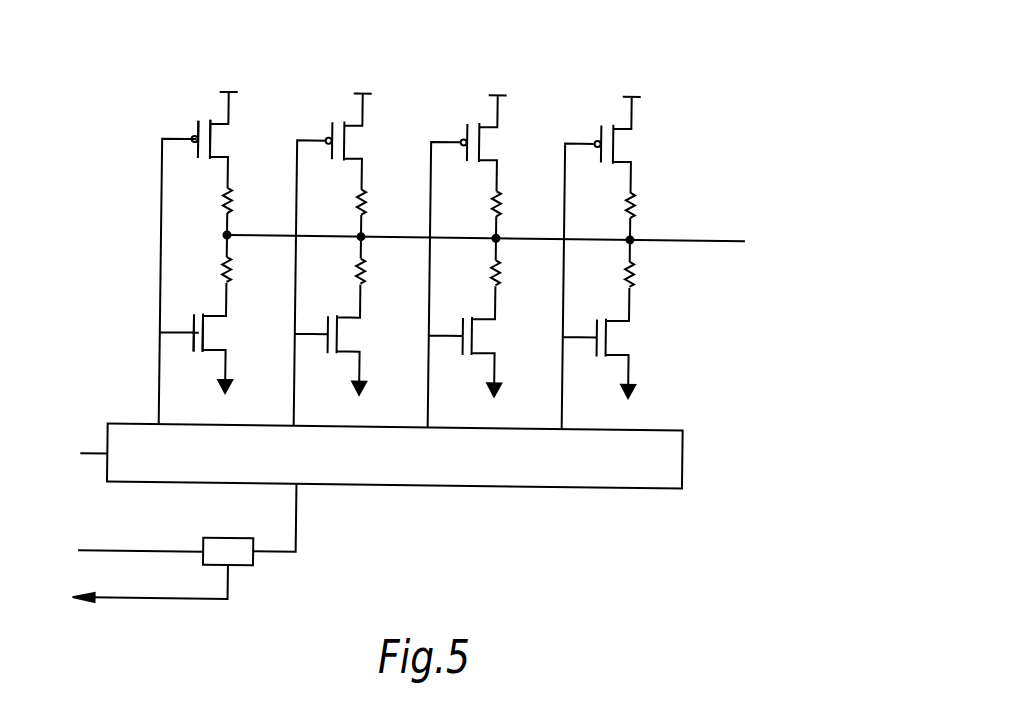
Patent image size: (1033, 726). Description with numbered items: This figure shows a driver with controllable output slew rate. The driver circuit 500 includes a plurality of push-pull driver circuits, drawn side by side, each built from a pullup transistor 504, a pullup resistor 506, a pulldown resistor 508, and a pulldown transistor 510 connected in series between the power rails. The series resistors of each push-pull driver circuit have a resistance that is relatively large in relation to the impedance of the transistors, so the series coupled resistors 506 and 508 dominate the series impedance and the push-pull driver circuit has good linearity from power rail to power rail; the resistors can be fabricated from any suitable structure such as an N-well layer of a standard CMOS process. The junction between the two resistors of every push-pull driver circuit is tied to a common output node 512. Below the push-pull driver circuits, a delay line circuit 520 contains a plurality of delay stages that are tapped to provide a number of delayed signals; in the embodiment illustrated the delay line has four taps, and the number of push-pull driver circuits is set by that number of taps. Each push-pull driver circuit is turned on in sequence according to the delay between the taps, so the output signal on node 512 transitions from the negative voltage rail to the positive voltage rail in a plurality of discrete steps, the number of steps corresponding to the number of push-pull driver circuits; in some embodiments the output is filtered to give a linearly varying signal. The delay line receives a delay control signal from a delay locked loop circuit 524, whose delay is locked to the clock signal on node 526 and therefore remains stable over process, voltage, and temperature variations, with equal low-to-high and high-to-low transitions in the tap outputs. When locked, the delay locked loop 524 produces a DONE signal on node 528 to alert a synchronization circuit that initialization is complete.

The driver circuit 500 is at (773, 40).
The pullup transistor 504 is at (221, 141).
The pullup resistor 506 is at (235, 201).
The pulldown resistor 508 is at (235, 269).
The pulldown transistor 510 is at (226, 336).
The output node 512 is at (728, 236).
The delay line circuit 520 is at (663, 484).
The delay locked loop circuit 524 is at (209, 536).
The clock signal node 526 is at (145, 549).
The DONE signal node 528 is at (212, 602).